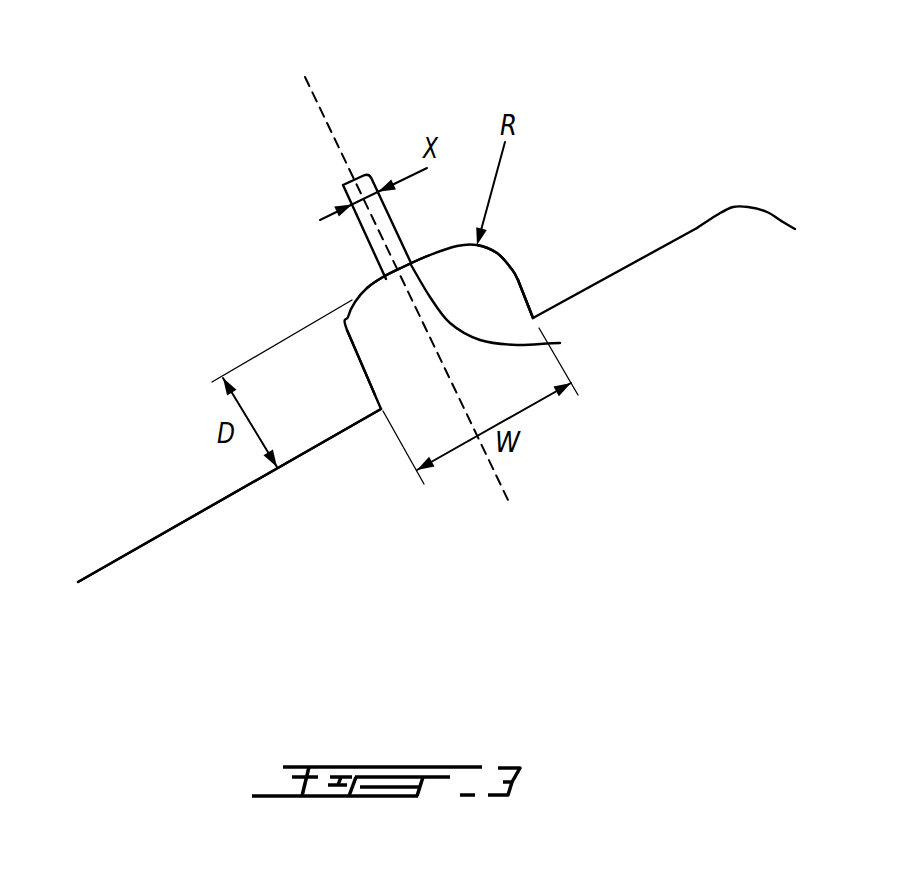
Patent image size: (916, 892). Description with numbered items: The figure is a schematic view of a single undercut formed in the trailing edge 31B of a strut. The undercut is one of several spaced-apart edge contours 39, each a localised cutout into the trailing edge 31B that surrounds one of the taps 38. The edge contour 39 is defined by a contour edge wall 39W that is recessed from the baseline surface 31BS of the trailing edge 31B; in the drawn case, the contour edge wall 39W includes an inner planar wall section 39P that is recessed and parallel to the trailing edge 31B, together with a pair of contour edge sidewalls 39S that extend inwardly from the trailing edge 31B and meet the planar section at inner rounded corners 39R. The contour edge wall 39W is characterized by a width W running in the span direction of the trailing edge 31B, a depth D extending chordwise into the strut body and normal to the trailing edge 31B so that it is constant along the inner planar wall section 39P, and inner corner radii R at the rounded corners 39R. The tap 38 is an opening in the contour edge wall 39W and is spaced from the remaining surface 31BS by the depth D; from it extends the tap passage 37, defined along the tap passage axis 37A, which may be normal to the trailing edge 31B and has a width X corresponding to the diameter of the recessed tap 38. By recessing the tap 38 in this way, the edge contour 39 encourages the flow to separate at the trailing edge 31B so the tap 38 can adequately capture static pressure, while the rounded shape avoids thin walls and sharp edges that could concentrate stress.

The trailing edge 31B is at (140, 574).
The baseline surface 31BS is at (330, 440).
The tap passage 37 is at (346, 184).
The tap passage axis 37A is at (399, 271).
The tap 38 is at (560, 343).
The edge contour 39 is at (400, 402).
The inner planar wall section 39P is at (374, 286).
The inner rounded corners 39R is at (497, 247).
The contour edge sidewalls 39S is at (357, 366).
The contour edge wall 39W is at (537, 268).